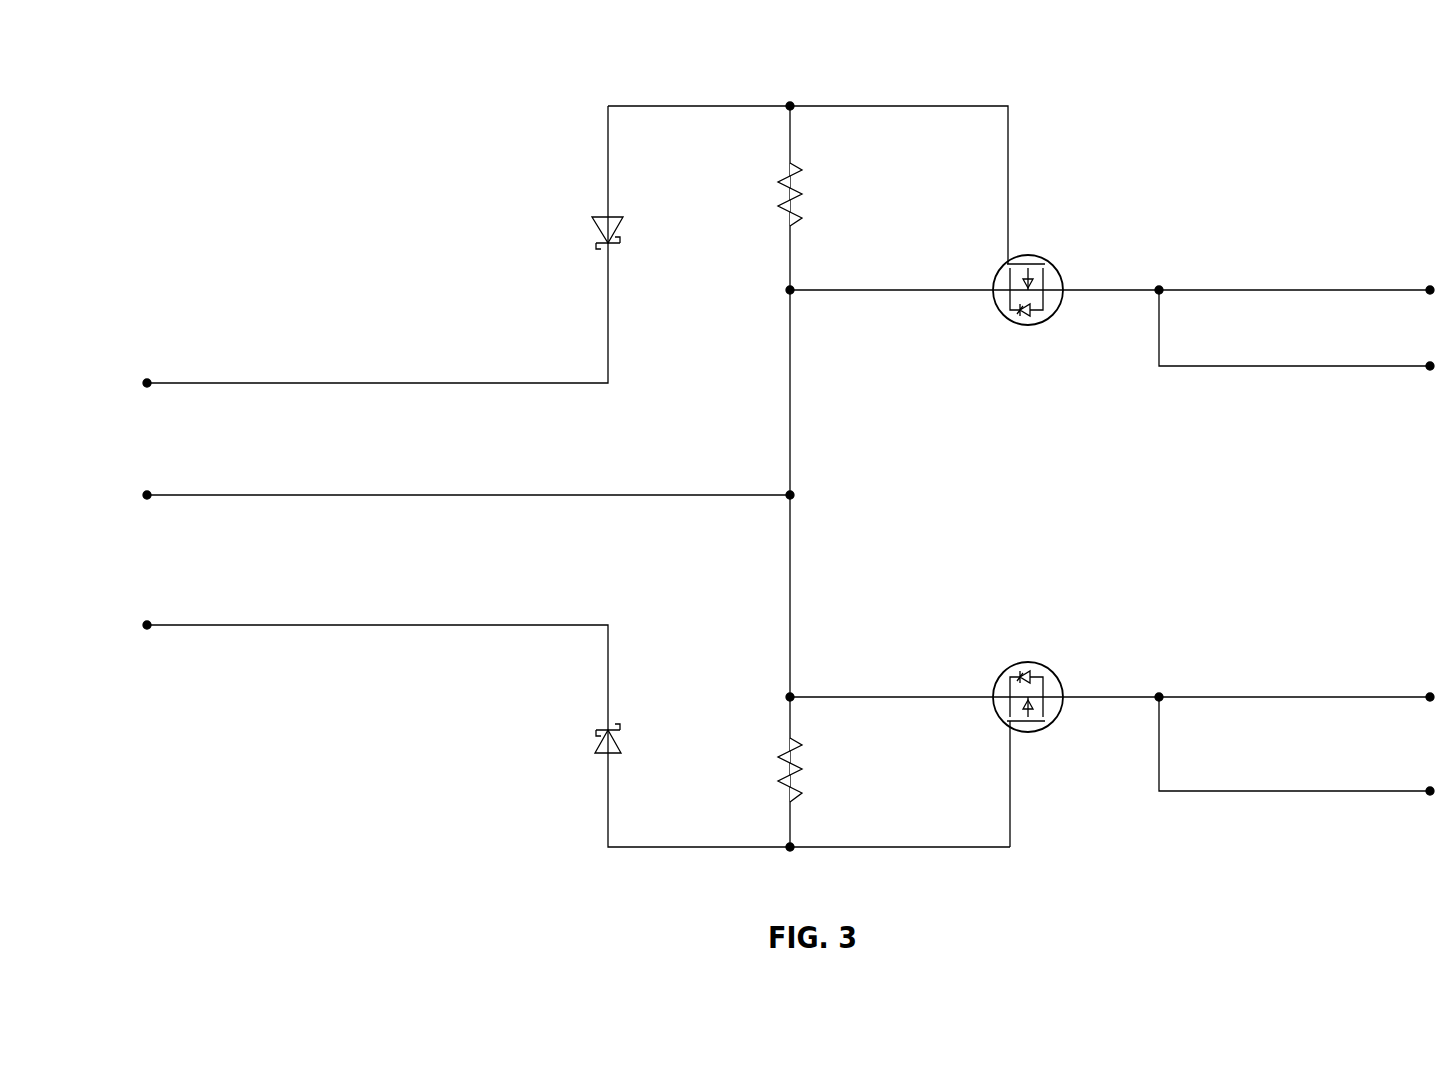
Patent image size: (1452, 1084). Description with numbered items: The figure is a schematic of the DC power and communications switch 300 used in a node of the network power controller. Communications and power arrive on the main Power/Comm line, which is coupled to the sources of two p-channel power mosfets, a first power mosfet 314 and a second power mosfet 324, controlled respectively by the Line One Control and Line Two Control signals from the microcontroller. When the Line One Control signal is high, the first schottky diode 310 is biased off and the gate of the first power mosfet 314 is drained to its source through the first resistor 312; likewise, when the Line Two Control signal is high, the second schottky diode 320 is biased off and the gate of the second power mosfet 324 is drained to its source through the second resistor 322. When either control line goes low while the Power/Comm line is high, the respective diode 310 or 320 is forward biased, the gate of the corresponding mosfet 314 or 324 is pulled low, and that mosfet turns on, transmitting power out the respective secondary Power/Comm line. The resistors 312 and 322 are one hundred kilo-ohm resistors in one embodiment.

The DC power and communications switch 300 is at (218, 97).
The schottky diode D4 310 is at (598, 755).
The resistor R3 312 is at (797, 789).
The power mosfet Q1 314 is at (1054, 724).
The schottky diode D3 320 is at (600, 215).
The resistor R4 322 is at (795, 216).
The power mosfet Q2 324 is at (1054, 270).